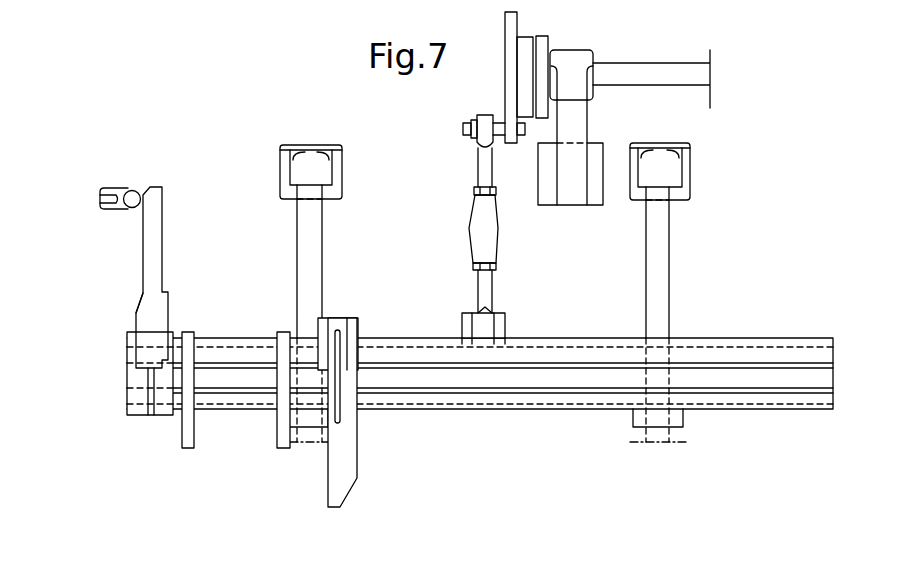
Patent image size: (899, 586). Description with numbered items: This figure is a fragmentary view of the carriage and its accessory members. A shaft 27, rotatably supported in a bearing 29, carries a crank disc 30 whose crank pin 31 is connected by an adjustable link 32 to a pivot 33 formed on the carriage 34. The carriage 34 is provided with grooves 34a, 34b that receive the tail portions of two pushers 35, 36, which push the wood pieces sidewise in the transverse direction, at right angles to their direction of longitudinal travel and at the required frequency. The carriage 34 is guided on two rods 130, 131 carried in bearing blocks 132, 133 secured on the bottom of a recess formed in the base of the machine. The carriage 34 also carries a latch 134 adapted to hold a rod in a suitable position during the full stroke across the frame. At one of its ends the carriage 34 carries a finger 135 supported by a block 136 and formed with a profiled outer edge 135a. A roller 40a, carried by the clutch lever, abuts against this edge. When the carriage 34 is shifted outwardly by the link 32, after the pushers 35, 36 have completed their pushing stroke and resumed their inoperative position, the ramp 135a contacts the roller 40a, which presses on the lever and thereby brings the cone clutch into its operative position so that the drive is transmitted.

The shaft 27 is at (703, 77).
The bearing 29 is at (572, 55).
The crank disc 30 is at (510, 42).
The crank pin 31 is at (487, 125).
The adjustable link 32 is at (490, 227).
The pivot 33 is at (500, 326).
The carriage 34 is at (562, 353).
The groove 34a is at (776, 363).
The groove 34b is at (818, 385).
The pusher 35 is at (188, 437).
The pusher 36 is at (283, 437).
The roller 40a is at (138, 194).
The rod 130 is at (318, 243).
The rod 131 is at (663, 247).
The bearing block 132 is at (283, 155).
The bearing block 133 is at (687, 168).
The latch 134 is at (342, 324).
The finger 135 is at (152, 258).
The profiled outer edge 135a is at (136, 317).
The block 136 is at (128, 399).